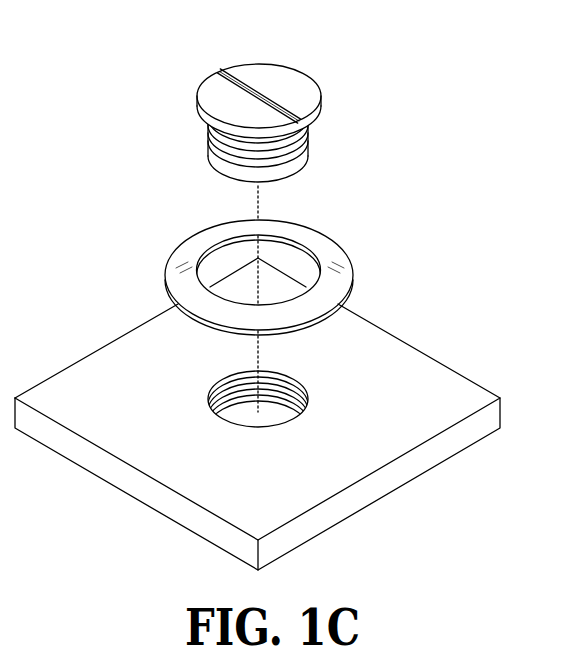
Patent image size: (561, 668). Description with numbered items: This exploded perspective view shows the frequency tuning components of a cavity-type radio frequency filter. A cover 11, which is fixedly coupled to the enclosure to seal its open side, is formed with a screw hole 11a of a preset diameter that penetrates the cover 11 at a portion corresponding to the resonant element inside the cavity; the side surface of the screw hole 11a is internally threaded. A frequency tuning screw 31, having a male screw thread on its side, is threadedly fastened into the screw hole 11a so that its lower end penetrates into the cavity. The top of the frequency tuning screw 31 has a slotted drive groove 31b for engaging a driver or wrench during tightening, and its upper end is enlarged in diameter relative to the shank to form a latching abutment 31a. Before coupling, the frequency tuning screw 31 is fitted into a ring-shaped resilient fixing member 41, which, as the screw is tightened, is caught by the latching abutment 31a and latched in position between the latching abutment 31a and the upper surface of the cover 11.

The cover 11 is at (277, 414).
The screw hole 11a is at (273, 412).
The frequency tuning screw 31 is at (251, 96).
The latching abutment 31a is at (200, 115).
The drive groove 31b is at (218, 77).
The ring-shaped resilient fixing member 41 is at (326, 245).